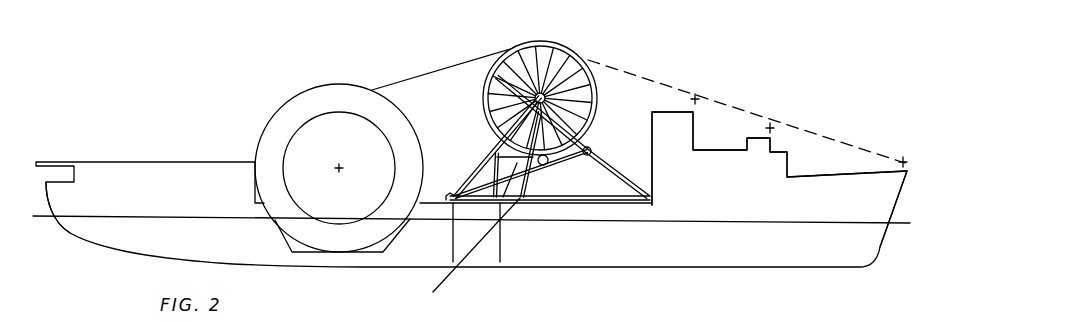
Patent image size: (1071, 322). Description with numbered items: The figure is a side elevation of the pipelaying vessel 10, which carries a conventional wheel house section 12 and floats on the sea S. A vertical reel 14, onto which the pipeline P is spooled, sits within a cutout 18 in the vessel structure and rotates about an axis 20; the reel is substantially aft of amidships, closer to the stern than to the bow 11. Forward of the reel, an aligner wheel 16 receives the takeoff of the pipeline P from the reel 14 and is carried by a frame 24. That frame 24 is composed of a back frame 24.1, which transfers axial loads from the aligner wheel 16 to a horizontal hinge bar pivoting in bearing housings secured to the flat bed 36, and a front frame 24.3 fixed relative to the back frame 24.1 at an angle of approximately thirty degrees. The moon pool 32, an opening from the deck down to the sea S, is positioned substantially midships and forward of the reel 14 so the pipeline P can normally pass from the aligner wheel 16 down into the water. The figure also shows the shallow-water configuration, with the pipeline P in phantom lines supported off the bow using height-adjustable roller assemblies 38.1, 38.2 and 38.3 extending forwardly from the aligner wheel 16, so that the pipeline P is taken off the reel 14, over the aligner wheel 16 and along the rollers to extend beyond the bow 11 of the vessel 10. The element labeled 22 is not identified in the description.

The pipelaying vessel 10 is at (726, 274).
The bow 11 is at (881, 226).
The wheel house section 12 is at (755, 96).
The vertical reel 14 is at (321, 87).
The aligner wheel 16 is at (591, 62).
The cutout 18 is at (378, 253).
The axis 20 is at (338, 167).
The bow 22 is at (72, 229).
The frame 24 is at (474, 166).
The back frame 24.1 is at (492, 146).
The front frame 24.3 is at (578, 180).
The moon pool 32 is at (485, 258).
The flat bed 36 is at (608, 196).
The roller assembly 38.1 is at (614, 144).
The roller assembly 38.2 is at (772, 128).
The roller assembly 38.3 is at (903, 160).
The pipeline P is at (428, 72).
The sea S is at (183, 212).